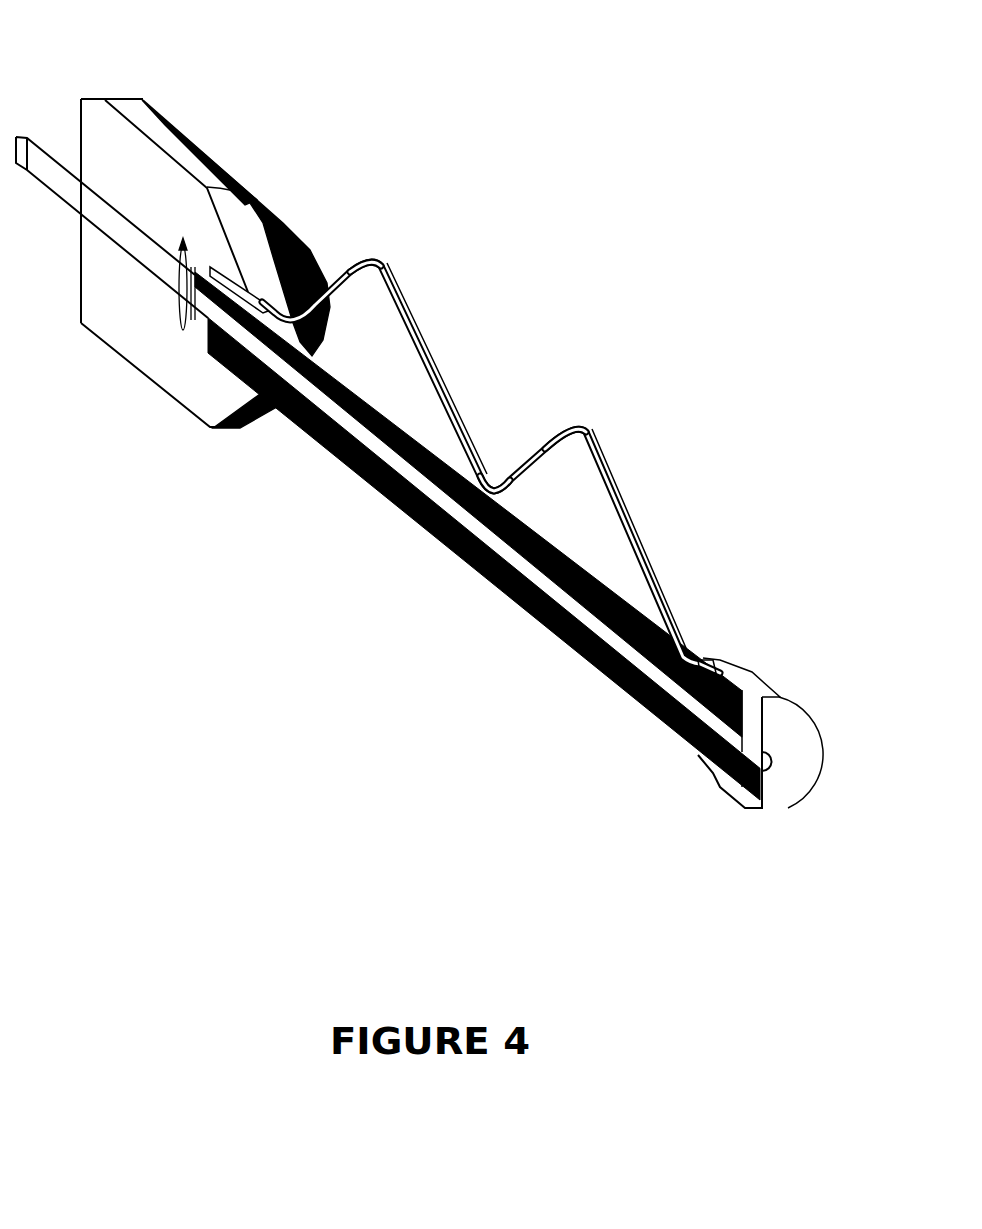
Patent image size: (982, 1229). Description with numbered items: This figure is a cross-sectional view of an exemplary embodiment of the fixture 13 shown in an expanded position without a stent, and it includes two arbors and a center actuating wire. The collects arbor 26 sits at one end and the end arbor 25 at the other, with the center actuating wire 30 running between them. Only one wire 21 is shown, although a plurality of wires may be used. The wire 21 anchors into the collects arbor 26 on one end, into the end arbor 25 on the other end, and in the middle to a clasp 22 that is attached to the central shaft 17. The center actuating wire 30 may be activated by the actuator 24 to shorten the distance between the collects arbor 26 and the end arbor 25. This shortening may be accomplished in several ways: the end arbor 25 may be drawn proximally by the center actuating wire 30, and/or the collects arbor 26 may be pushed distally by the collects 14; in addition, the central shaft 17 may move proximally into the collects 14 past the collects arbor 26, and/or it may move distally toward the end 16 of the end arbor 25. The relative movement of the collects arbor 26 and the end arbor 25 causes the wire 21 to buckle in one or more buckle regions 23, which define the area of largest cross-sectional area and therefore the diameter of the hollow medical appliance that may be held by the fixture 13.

The fixture 13 is at (247, 662).
The collects 14 is at (130, 328).
The end 16 is at (787, 733).
The central shaft 17 is at (620, 697).
The wire 21 is at (437, 372).
The clasp 22 is at (487, 478).
The buckle region 23 is at (380, 268).
The actuator 24 is at (28, 173).
The end arbor 25 is at (718, 673).
The collects arbor 26 is at (248, 292).
The center actuating wire 30 is at (582, 618).